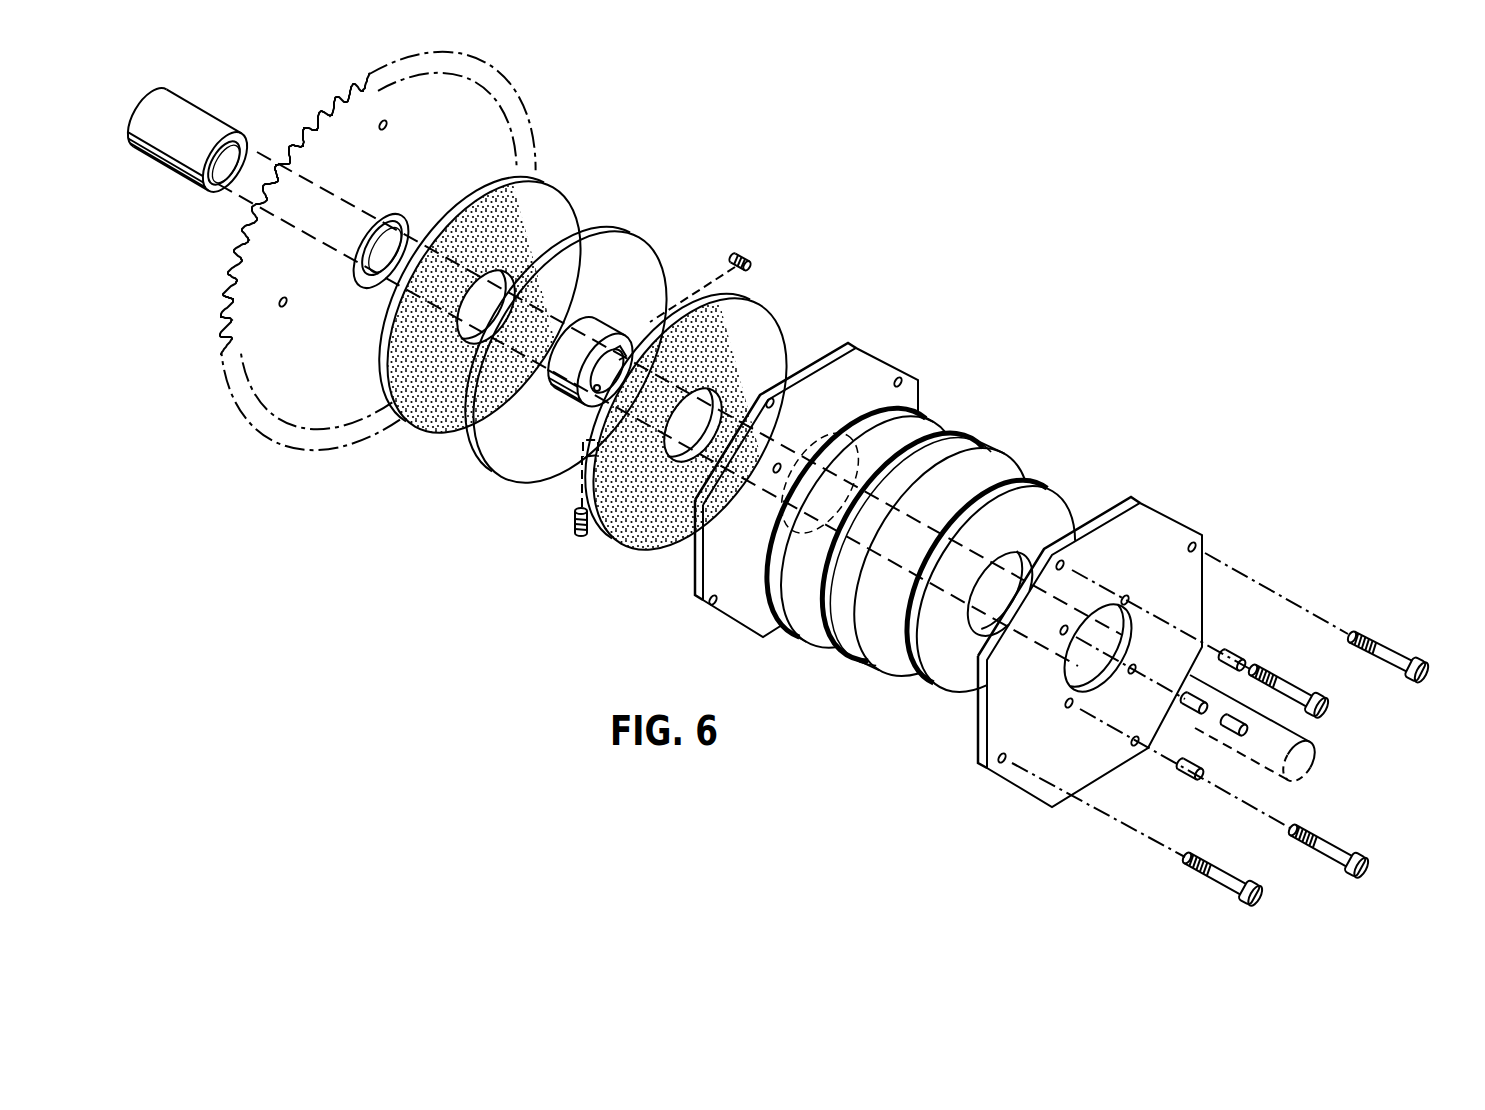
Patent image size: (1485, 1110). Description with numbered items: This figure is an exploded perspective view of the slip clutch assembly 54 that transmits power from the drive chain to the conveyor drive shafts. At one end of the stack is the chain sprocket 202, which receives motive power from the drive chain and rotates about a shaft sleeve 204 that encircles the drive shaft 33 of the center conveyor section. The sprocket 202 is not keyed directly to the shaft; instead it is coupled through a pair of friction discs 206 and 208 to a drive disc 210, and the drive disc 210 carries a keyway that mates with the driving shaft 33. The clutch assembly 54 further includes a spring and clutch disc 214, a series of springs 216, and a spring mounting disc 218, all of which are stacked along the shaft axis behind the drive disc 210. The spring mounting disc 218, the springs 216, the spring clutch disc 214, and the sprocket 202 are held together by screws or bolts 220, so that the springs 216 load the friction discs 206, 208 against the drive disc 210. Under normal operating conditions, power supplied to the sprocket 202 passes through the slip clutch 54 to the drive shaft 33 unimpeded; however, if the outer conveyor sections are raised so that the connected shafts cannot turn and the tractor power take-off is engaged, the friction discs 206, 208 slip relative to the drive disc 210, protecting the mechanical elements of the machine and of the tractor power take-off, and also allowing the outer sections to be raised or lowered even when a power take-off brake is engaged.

The drive shaft 33 is at (1303, 762).
The slip clutch assembly 54 is at (985, 535).
The chain sprocket 202 is at (493, 140).
The shaft sleeve 204 is at (182, 113).
The friction disc 206 is at (543, 212).
The friction disc 208 is at (757, 332).
The drive disc 210 is at (635, 267).
The spring and clutch disc 214 is at (880, 373).
The springs 216 is at (893, 423).
The spring mounting disc 218 is at (1192, 567).
The bolts 220 is at (1387, 650).